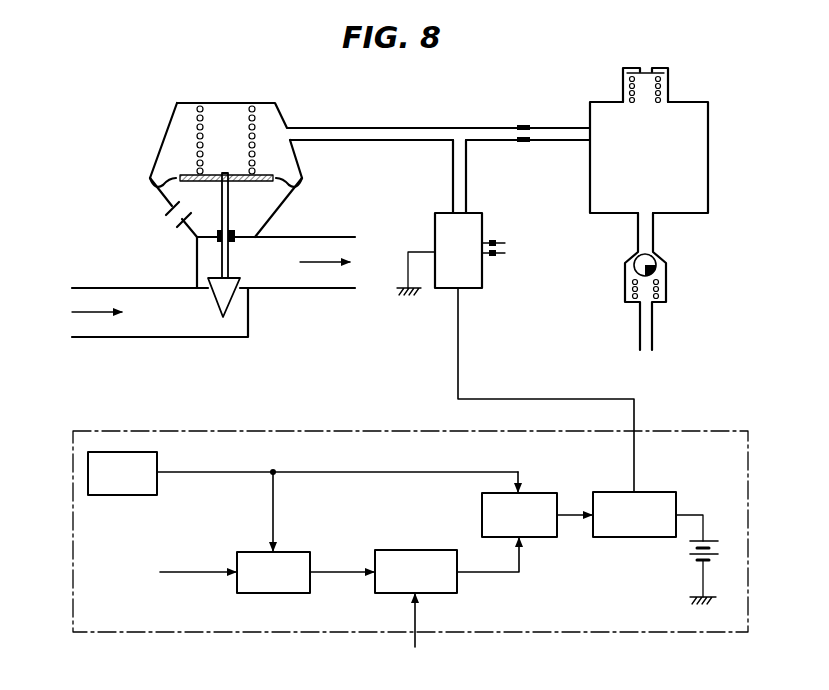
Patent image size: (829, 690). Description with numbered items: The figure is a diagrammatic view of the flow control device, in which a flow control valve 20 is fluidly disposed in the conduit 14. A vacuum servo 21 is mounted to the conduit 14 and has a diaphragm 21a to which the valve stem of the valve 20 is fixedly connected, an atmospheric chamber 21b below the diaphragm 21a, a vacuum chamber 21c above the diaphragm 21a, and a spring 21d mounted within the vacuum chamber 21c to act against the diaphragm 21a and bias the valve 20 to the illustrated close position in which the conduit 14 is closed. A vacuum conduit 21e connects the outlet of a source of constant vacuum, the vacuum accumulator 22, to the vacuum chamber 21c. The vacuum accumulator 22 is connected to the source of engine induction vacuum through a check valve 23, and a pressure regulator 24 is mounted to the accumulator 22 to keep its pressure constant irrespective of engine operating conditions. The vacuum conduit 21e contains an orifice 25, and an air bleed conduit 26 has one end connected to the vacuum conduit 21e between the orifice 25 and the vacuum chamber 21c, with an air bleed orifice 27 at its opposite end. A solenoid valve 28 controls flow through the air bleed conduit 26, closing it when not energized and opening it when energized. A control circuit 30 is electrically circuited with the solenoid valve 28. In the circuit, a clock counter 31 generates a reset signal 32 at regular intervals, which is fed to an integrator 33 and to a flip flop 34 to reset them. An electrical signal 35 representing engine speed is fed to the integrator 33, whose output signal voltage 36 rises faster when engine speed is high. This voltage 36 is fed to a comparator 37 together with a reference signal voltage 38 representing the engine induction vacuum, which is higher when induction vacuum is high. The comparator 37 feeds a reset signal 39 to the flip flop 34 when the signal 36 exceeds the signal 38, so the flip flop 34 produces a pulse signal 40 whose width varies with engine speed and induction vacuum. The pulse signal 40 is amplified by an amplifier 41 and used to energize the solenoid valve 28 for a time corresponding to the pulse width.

The conduit 14 is at (155, 287).
The flow control valve 20 is at (226, 298).
The vacuum servo 21 is at (158, 139).
The diaphragm 21a is at (306, 176).
The atmospheric chamber 21b is at (166, 218).
The vacuum chamber 21c is at (223, 115).
The spring 21d is at (256, 130).
The vacuum conduit 21e is at (412, 127).
The vacuum accumulator 22 is at (708, 178).
The check valve 23 is at (666, 283).
The pressure regulator 24 is at (668, 84).
The orifice 25 is at (523, 124).
The air bleed conduit 26 is at (466, 178).
The air bleed orifice 27 is at (492, 258).
The solenoid valve 28 is at (445, 283).
The control circuit 30 is at (386, 430).
The clock counter 31 is at (128, 497).
The reset signal 32 is at (210, 474).
The integrator 33 is at (297, 551).
The flip flop 34 is at (546, 492).
The electrical signal 35 is at (197, 570).
The output signal voltage 36 is at (340, 575).
The comparator 37 is at (411, 549).
The reference signal voltage 38 is at (419, 622).
The reset signal 39 is at (500, 573).
The pulse signal 40 is at (572, 518).
The amplifier 41 is at (661, 492).